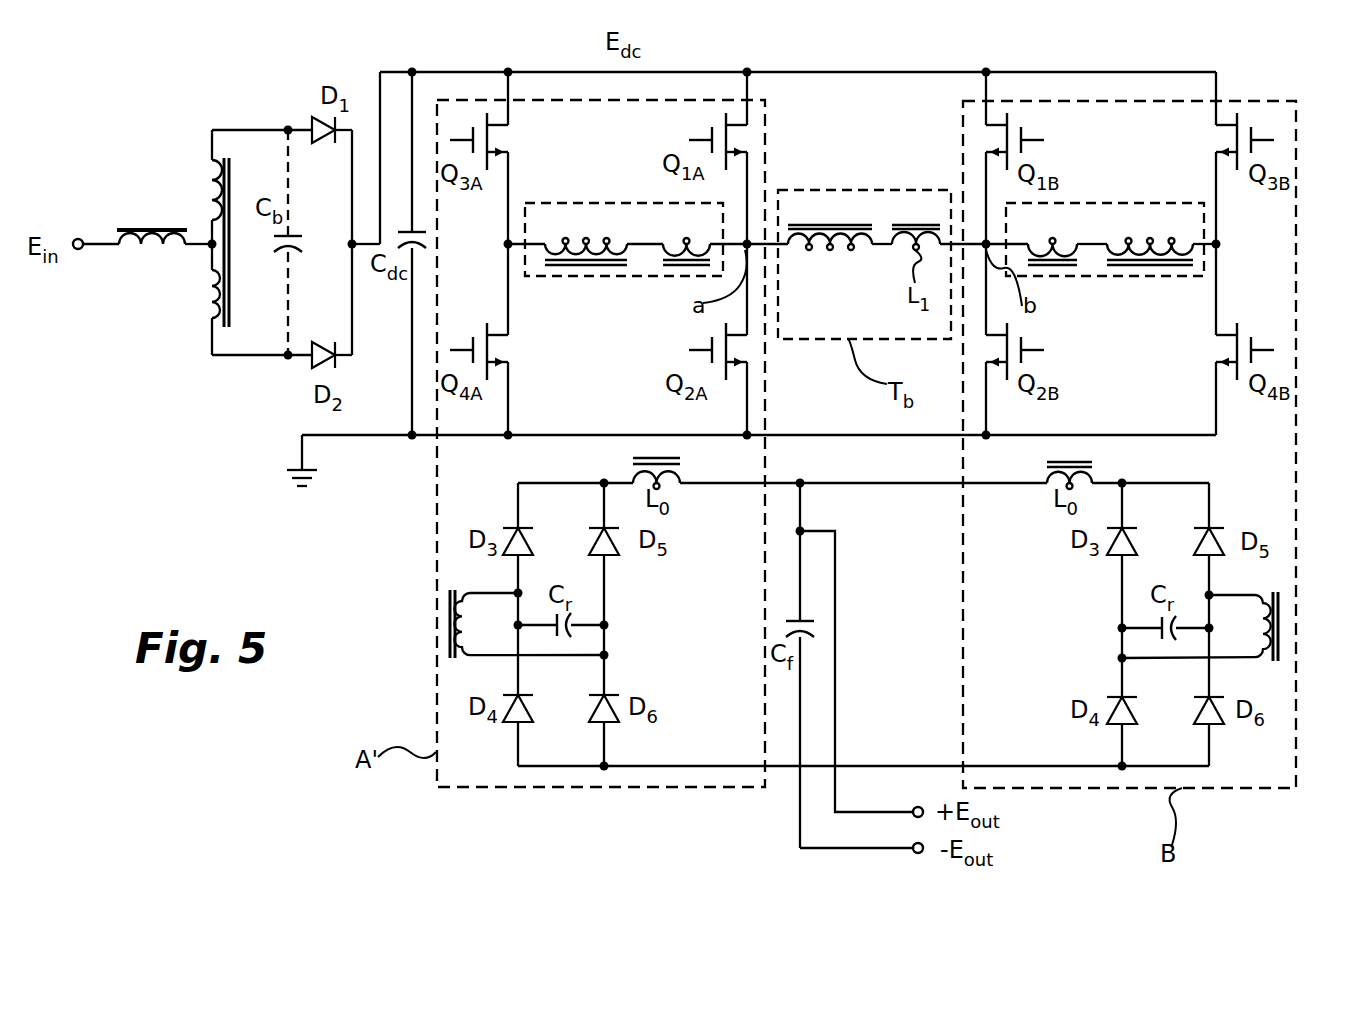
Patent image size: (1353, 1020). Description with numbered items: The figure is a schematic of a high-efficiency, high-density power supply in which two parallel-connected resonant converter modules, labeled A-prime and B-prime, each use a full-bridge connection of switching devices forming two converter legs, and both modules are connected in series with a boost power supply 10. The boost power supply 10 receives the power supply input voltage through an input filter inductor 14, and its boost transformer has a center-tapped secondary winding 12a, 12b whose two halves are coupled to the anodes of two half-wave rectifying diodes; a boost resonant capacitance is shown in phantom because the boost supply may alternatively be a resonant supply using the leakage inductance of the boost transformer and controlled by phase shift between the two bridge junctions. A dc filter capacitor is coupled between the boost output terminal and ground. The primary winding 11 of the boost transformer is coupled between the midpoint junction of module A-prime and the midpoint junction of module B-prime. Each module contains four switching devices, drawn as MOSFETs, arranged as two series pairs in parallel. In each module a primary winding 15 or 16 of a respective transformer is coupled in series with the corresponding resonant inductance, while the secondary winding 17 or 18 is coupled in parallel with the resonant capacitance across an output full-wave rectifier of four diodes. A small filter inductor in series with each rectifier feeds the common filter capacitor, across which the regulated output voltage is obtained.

The boost power supply 10 is at (179, 222).
The primary winding of boost transformer 11 is at (852, 250).
The center-tapped secondary winding (first half) 12a is at (205, 188).
The center-tapped secondary winding (second half) 12b is at (205, 312).
The input filter inductor 14 is at (134, 246).
The primary winding of transformer T1 15 is at (569, 245).
The primary winding of transformer T2 16 is at (1125, 246).
The secondary winding of transformer T1 17 is at (460, 656).
The secondary winding of transformer T2 18 is at (1260, 593).